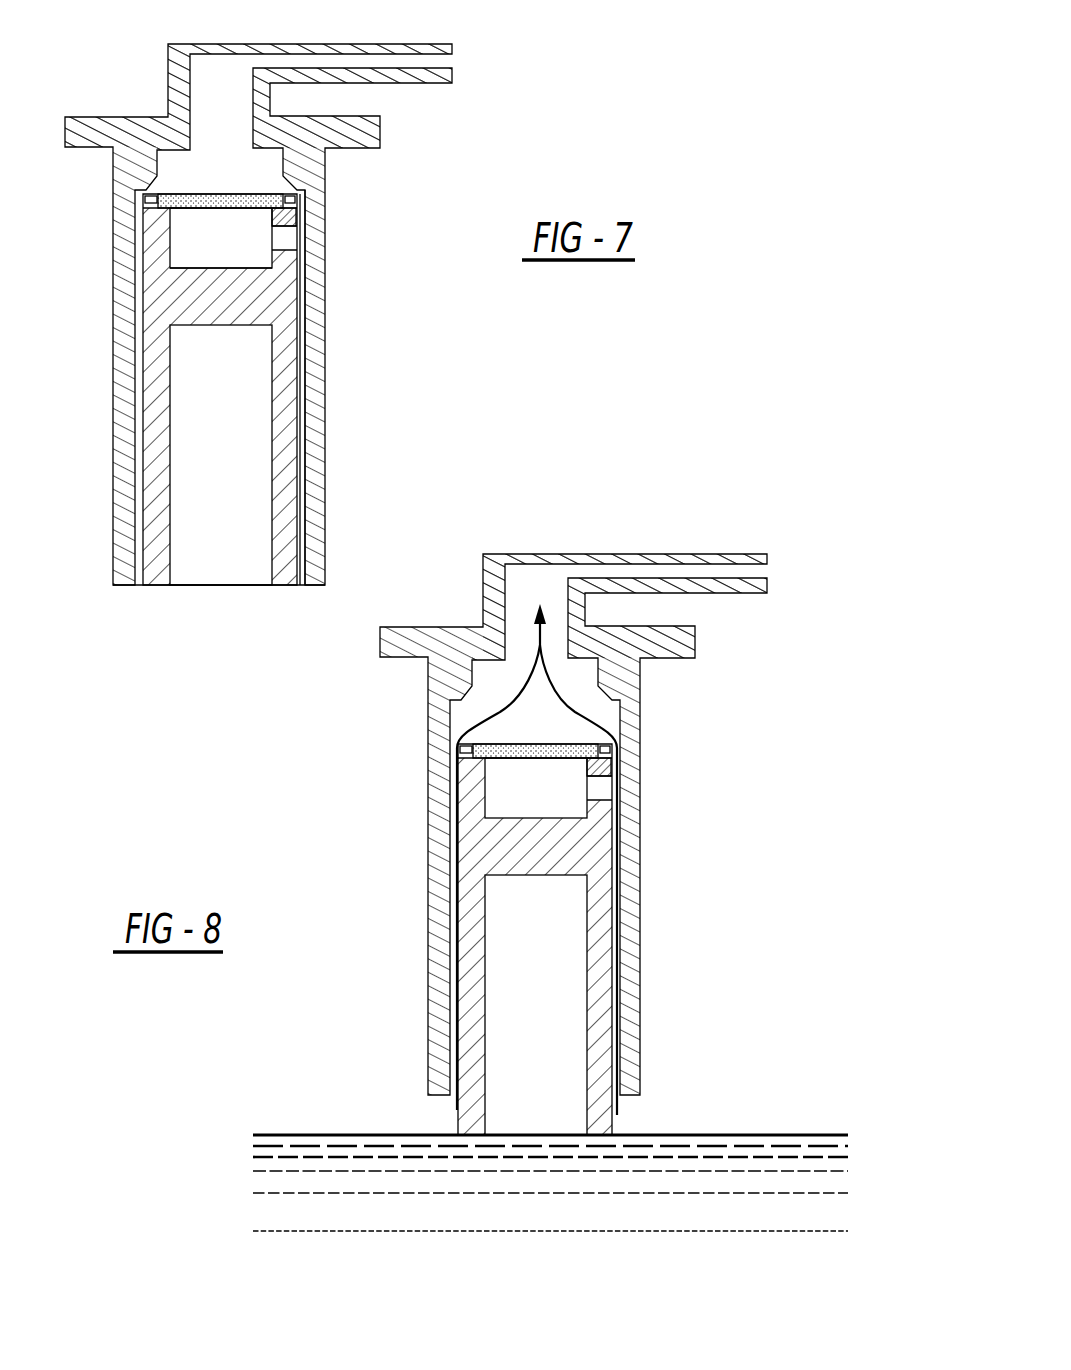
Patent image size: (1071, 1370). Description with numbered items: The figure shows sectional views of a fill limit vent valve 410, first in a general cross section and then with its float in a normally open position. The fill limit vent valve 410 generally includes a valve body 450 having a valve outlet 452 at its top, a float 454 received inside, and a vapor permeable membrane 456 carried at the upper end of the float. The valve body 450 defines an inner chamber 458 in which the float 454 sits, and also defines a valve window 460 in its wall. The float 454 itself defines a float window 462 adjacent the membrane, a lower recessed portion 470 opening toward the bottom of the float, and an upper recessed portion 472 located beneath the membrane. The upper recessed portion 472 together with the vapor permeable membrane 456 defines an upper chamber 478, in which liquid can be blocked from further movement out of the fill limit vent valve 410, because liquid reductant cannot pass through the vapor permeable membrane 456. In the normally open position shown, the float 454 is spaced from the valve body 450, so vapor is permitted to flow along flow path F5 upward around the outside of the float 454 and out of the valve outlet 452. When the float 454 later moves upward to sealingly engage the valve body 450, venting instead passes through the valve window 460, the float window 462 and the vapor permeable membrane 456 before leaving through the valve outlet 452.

In FIG. 7, the fill limit vent valve 410 is at (80, 91).
In FIG. 8, the fill limit vent valve 410 is at (346, 742).
In FIG. 7, the valve body 450 is at (120, 220).
In FIG. 8, the valve body 450 is at (436, 800).
In FIG. 7, the valve outlet 452 is at (223, 64).
In FIG. 8, the valve outlet 452 is at (523, 562).
In FIG. 7, the float 454 is at (262, 359).
In FIG. 8, the float 454 is at (609, 921).
In FIG. 7, the vapor permeable membrane 456 is at (243, 198).
In FIG. 8, the vapor permeable membrane 456 is at (500, 754).
In FIG. 7, the inner chamber 458 is at (113, 165).
In FIG. 7, the valve window 460 is at (312, 250).
In FIG. 7, the float window 462 is at (280, 233).
In FIG. 7, the lower recessed portion 470 is at (270, 517).
In FIG. 7, the upper recessed portion 472 is at (230, 270).
In FIG. 7, the upper chamber 478 is at (199, 243).
In FIG. 8, the flow path F5 is at (588, 727).